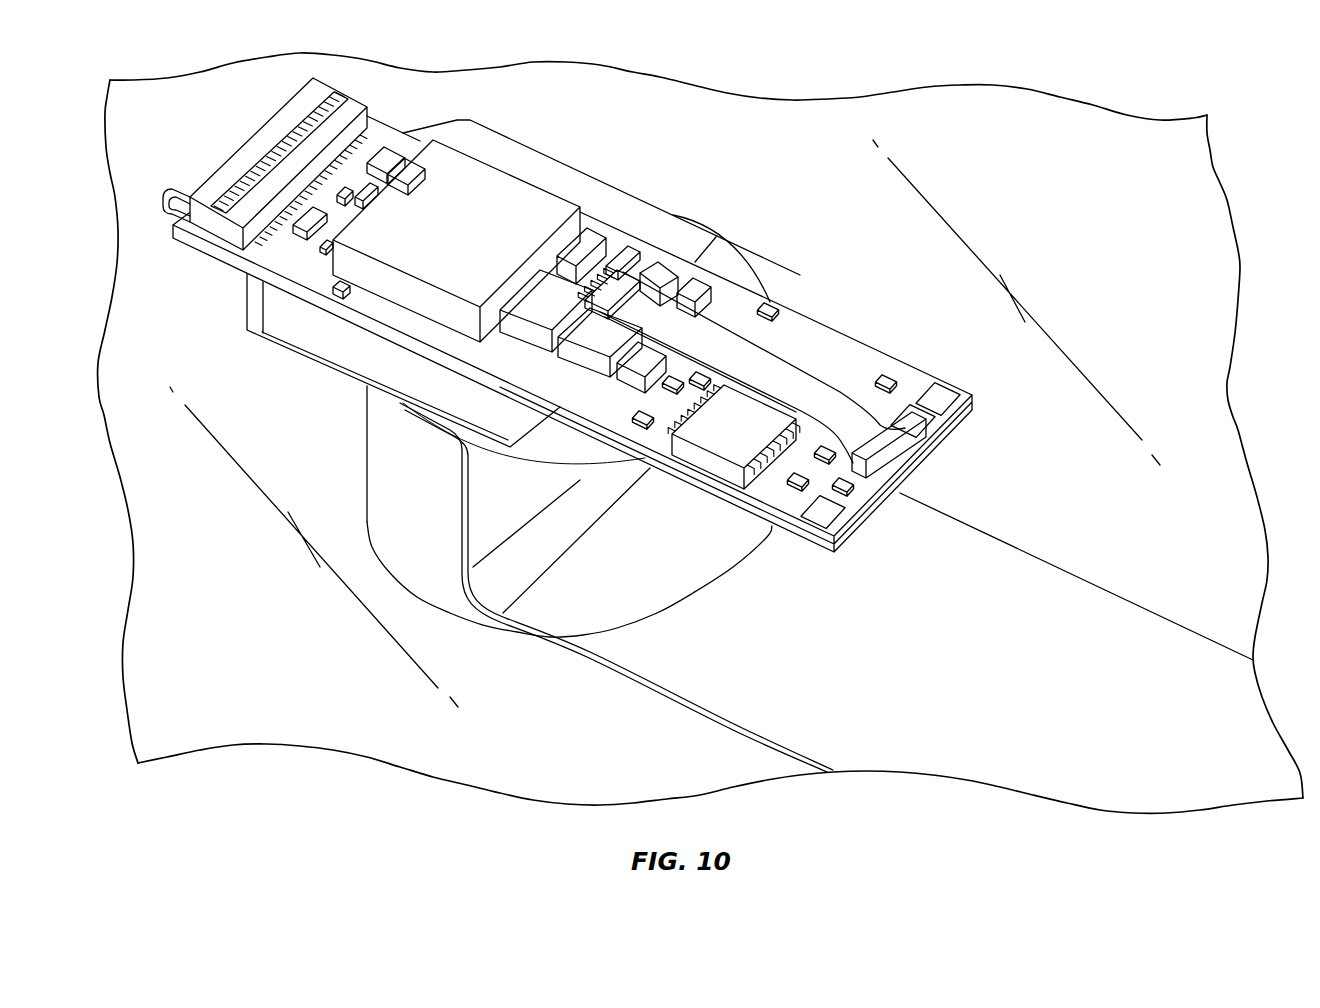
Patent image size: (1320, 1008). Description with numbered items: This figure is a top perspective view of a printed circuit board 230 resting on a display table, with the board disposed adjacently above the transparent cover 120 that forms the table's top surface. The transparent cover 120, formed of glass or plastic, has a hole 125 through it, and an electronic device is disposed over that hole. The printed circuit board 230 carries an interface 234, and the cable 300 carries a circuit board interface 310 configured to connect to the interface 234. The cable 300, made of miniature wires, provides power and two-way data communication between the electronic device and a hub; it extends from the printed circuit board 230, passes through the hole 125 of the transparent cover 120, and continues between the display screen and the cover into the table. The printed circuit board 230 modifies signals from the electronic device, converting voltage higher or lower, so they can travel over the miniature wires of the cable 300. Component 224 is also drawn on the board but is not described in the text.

The transparent cover 120 is at (1182, 237).
The hole 125 is at (540, 452).
The flexible connector / flex cable 224 is at (624, 291).
The printed circuit board 230 is at (383, 310).
The interface 234 is at (280, 140).
The cable 300 is at (735, 700).
The circuit board interface 310 is at (190, 173).